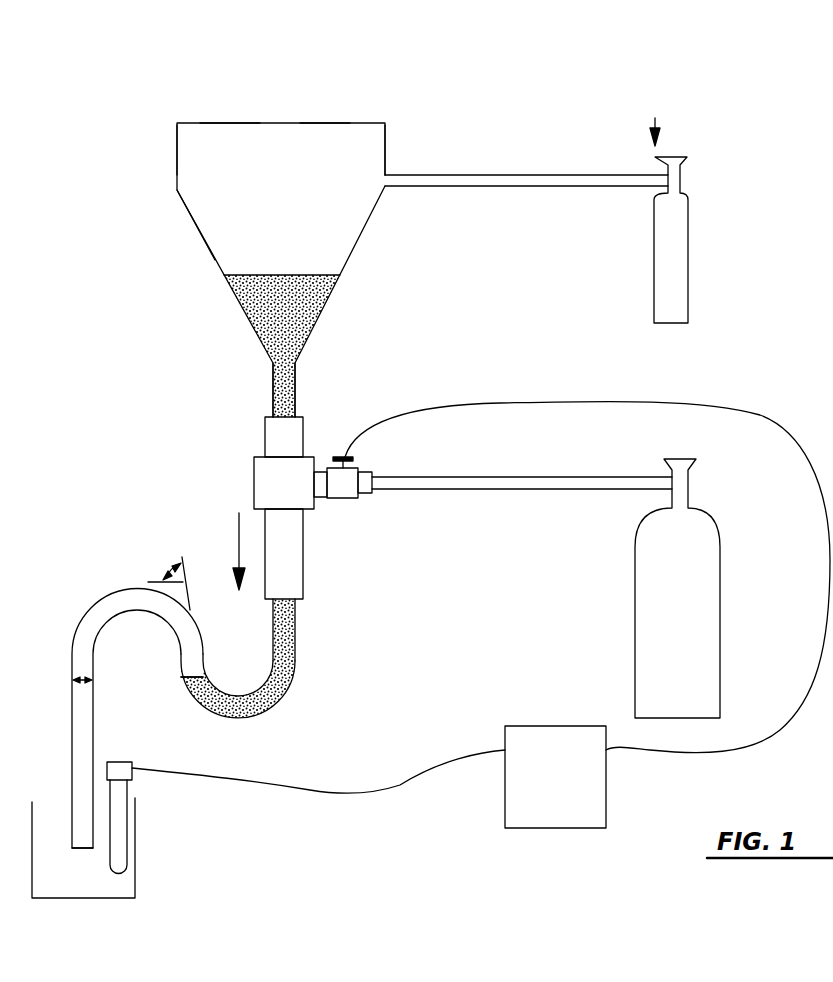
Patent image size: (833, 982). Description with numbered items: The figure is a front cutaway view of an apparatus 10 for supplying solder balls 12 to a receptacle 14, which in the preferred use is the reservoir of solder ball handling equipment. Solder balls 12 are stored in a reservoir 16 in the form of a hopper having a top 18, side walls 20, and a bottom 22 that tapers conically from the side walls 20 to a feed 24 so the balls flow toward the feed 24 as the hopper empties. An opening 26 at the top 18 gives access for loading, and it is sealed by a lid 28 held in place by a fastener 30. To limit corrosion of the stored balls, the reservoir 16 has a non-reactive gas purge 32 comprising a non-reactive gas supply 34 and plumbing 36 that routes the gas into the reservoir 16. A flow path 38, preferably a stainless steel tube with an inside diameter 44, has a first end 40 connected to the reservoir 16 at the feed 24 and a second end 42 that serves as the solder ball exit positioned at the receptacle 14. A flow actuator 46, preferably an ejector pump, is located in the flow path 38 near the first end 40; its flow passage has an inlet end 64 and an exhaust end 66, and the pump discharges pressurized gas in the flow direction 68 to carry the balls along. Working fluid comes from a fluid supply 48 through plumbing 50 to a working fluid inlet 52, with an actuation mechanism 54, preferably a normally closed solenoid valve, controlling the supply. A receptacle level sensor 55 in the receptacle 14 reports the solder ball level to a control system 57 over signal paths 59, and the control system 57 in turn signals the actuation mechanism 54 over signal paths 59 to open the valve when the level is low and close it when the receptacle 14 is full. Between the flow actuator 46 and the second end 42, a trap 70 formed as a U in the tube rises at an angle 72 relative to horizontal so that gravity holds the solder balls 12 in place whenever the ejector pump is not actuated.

The apparatus 10 is at (423, 103).
The solder balls 12 is at (312, 275).
The receptacle 14 is at (135, 838).
The reservoir 16 is at (177, 178).
The top 18 is at (390, 128).
The side walls 20 is at (188, 212).
The bottom 22 is at (308, 330).
The feed 24 is at (295, 370).
The opening 26 is at (207, 132).
The lid 28 is at (313, 123).
The fastener 30 is at (178, 150).
The non-reactive gas purge 32 is at (655, 118).
The non-reactive gas supply 34 is at (688, 256).
The plumbing 36 is at (520, 175).
The flow path 38 is at (295, 640).
The first end 40 is at (273, 380).
The second end 42 is at (80, 850).
The inside diameter 44 is at (78, 678).
The flow actuator 46 is at (254, 482).
The fluid supply 48 is at (720, 570).
The plumbing 50 is at (527, 477).
The working fluid inlet 52 is at (325, 498).
The actuation mechanism 54 is at (352, 466).
The receptacle level sensor 55 is at (130, 762).
The control system 57 is at (548, 726).
The signal paths 59 is at (745, 402).
The inlet end 64 is at (265, 422).
The exhaust end 66 is at (303, 592).
The flow direction 68 is at (239, 515).
The trap 70 is at (182, 682).
The angle 72 is at (165, 578).